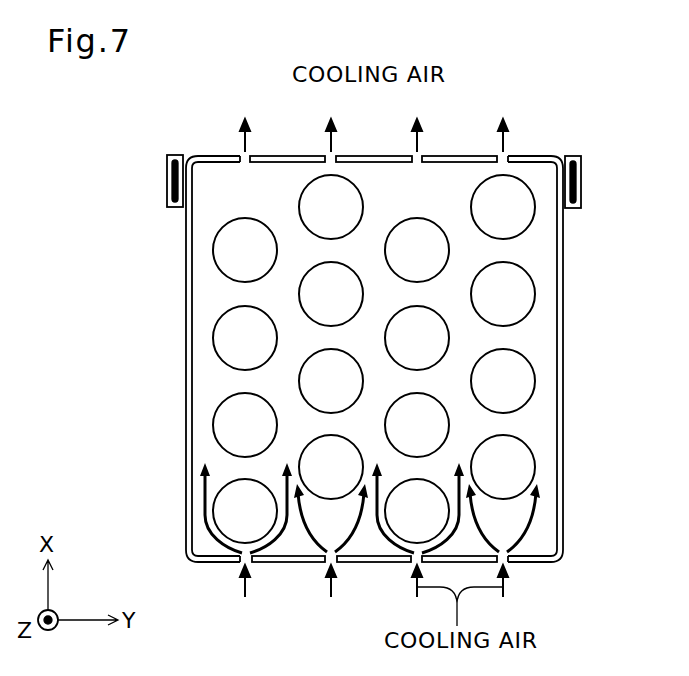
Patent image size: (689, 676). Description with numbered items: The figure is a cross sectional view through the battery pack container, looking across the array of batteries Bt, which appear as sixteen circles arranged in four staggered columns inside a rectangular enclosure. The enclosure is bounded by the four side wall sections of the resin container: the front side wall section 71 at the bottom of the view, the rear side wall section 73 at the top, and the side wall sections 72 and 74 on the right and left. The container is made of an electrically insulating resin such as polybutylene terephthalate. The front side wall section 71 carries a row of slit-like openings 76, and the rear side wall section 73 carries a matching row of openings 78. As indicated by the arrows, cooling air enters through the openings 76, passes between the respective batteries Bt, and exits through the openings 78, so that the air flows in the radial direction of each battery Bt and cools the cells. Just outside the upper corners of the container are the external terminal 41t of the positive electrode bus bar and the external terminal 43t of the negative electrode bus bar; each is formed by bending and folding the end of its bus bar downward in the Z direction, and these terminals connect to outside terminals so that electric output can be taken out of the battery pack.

The front side wall section 71 is at (386, 364).
The side wall section 72 is at (563, 431).
The rear side wall section 73 is at (460, 155).
The side wall section 74 is at (186, 431).
The openings 76 is at (327, 563).
The openings 78 is at (330, 155).
The external terminal 41t is at (167, 178).
The external terminal 43t is at (583, 183).
The batteries Bt is at (527, 383).